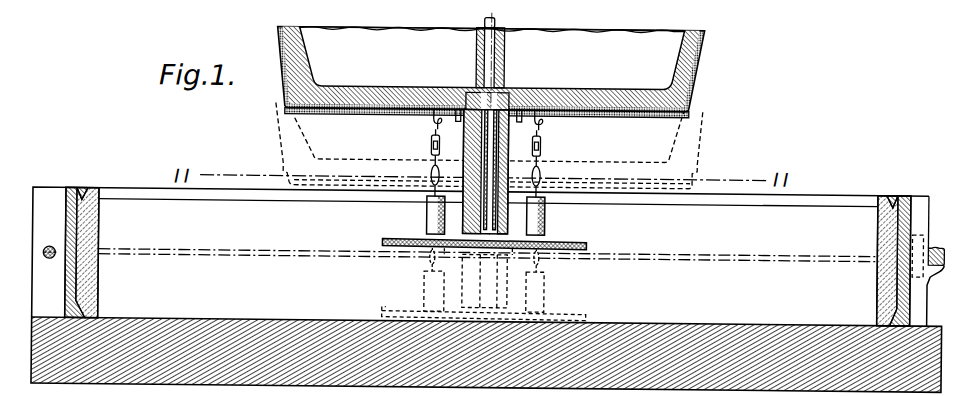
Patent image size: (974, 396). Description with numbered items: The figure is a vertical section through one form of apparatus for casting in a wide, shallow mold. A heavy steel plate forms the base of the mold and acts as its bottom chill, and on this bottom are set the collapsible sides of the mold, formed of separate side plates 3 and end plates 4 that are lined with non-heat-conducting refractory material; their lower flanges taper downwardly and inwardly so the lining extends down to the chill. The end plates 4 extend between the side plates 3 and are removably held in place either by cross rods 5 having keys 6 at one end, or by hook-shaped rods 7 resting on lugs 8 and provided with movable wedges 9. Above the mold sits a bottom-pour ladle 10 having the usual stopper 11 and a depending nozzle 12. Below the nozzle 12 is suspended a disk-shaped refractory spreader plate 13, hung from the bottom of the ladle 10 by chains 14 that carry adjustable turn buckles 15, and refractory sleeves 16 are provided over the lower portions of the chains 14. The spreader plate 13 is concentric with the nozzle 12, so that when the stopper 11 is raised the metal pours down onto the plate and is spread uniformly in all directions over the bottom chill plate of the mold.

The side plates 3 is at (829, 189).
The end plates 4 is at (70, 222).
The cross rods 5 is at (50, 259).
The keys 6 is at (44, 254).
The hook-shaped rods 7 is at (946, 249).
The lugs 8 is at (932, 268).
The movable wedges 9 is at (927, 236).
The bottom-pour ladle 10 is at (703, 54).
The stopper 11 is at (502, 75).
The nozzle 12 is at (508, 276).
The spreader plate 13 is at (568, 237).
The chains 14 is at (431, 172).
The turn buckles 15 is at (431, 142).
The refractory sleeves 16 is at (427, 214).